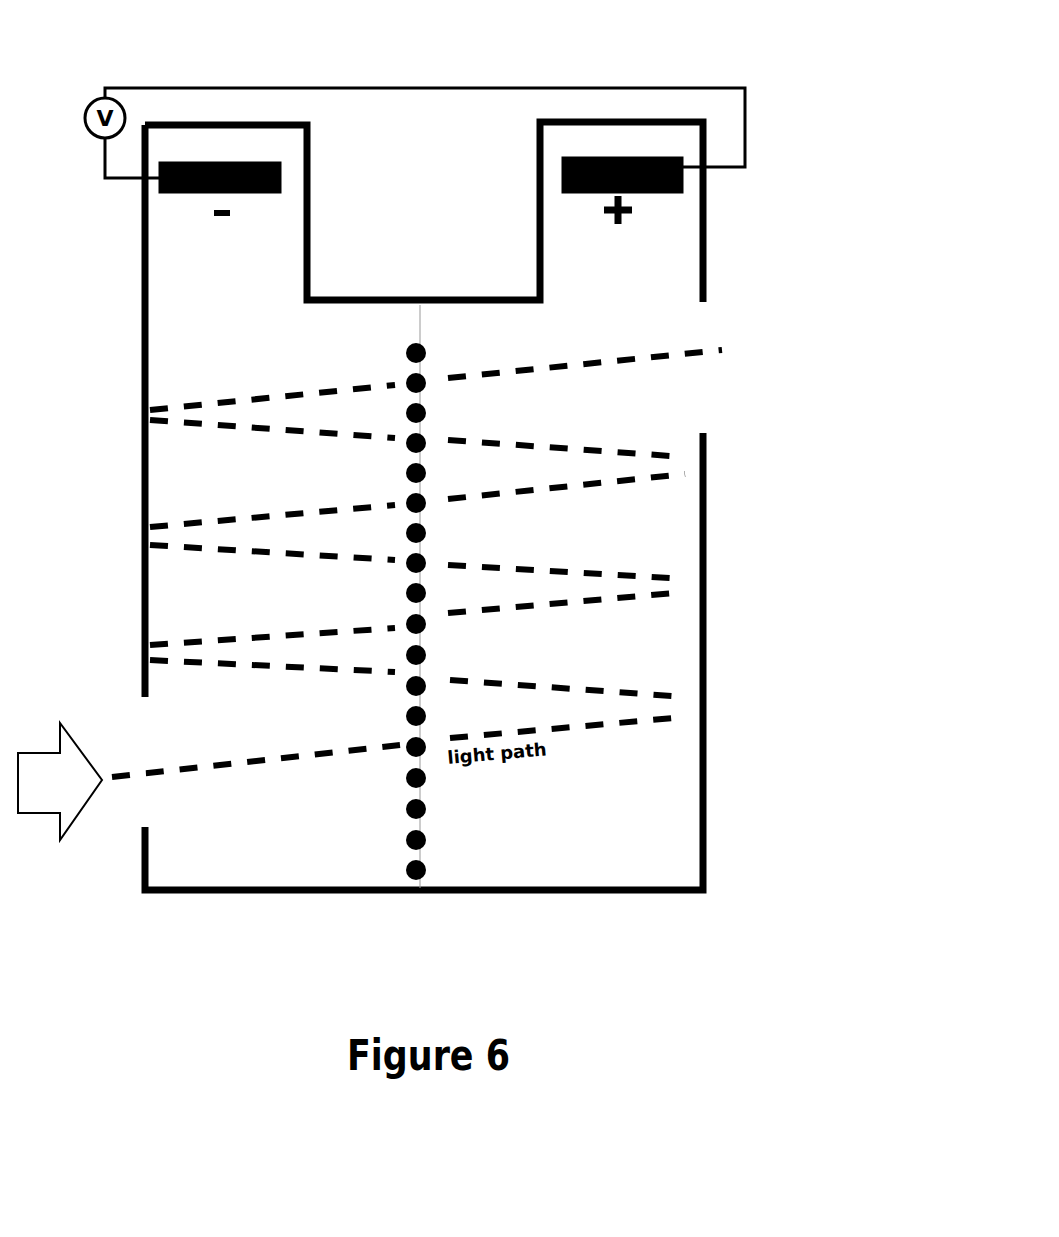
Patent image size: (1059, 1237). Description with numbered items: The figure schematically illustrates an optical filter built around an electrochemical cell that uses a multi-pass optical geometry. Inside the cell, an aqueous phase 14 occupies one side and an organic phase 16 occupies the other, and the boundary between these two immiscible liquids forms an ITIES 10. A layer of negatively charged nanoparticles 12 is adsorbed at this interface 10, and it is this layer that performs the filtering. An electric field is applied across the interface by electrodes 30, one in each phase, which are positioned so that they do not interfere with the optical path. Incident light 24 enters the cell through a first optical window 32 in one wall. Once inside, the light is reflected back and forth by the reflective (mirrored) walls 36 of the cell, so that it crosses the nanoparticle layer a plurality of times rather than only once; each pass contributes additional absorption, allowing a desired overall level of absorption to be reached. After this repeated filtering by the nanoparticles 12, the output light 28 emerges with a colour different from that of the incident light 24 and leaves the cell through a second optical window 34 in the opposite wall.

The ITIES 10 is at (428, 318).
The nanoparticles 12 is at (432, 875).
The aqueous phase 14 is at (242, 880).
The organic phase 16 is at (645, 878).
The incident light 24 is at (40, 808).
The output light 28 is at (770, 322).
The electrodes 30 is at (283, 172).
The first optical window 32 is at (142, 807).
The second optical window 34 is at (714, 427).
The reflective (mirrored) walls 36 is at (113, 548).